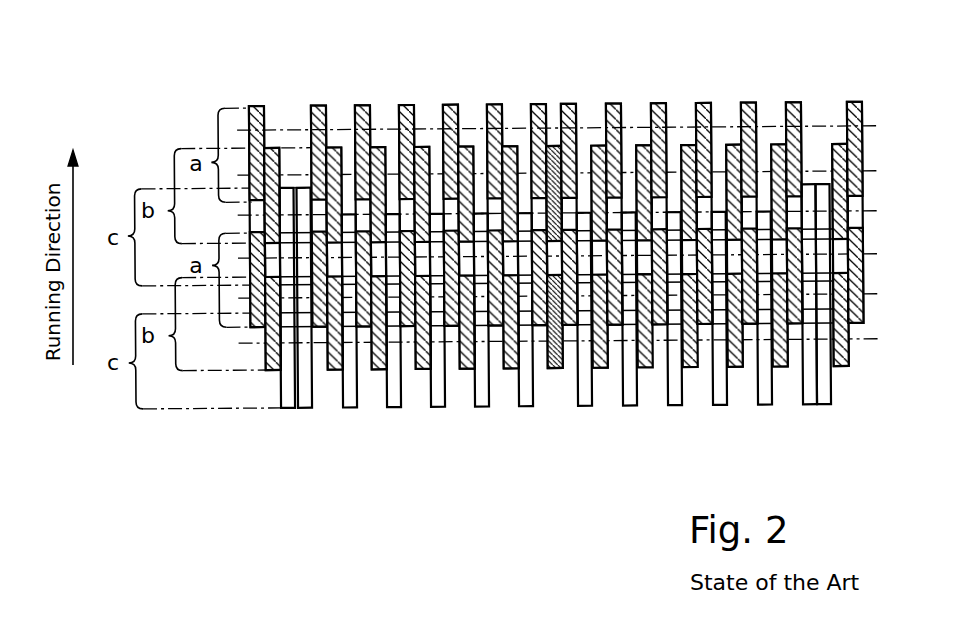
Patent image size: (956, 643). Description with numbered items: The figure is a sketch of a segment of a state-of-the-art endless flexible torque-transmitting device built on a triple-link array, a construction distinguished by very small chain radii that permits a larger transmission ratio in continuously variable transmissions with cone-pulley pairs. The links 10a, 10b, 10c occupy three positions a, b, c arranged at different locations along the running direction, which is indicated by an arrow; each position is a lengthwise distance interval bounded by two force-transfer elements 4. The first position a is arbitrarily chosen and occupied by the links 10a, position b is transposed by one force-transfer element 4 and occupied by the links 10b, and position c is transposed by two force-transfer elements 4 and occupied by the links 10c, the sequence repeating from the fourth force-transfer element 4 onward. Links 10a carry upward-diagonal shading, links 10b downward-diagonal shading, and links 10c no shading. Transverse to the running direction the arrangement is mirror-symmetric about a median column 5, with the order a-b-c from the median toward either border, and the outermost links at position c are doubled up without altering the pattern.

The force-transfer element 4 is at (827, 124).
The median column 5 is at (553, 372).
The links at position a 10a is at (641, 370).
The links at position b 10b is at (641, 146).
The links at position c 10c is at (684, 146).